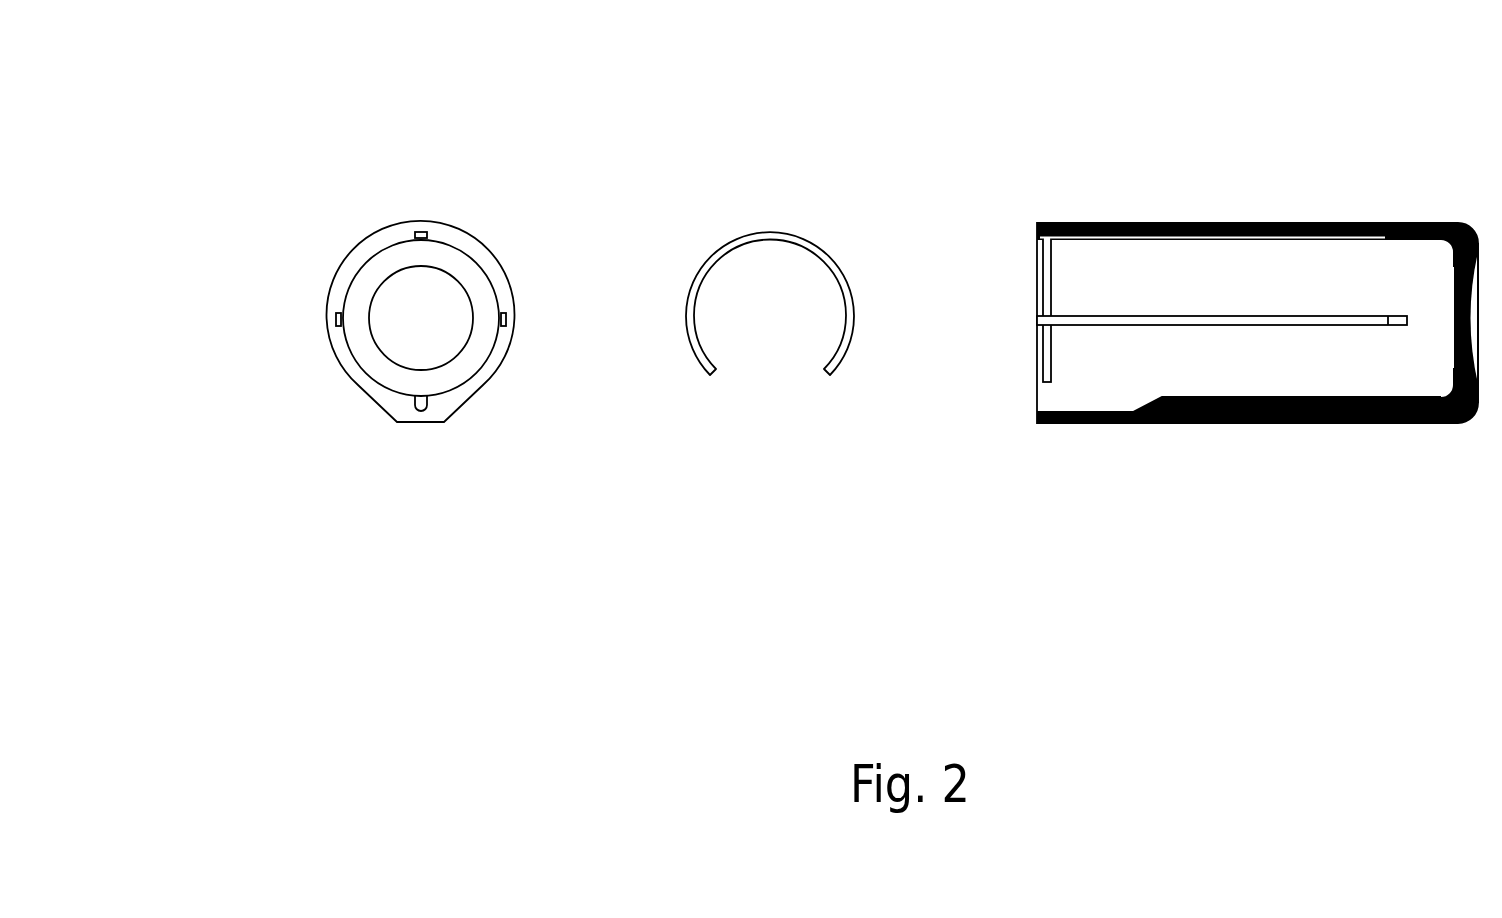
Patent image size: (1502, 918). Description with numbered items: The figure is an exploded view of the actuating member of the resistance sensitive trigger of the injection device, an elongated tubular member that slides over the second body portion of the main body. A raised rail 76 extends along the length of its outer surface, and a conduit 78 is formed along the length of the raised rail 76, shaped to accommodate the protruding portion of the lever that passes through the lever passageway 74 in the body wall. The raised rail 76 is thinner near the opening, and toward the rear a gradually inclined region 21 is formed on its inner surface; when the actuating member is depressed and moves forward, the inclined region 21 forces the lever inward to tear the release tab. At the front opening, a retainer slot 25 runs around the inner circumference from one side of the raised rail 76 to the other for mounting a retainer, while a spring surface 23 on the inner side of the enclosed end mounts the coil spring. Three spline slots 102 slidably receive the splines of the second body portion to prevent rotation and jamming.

The inclined region 21 is at (1156, 419).
The spring surface 23 is at (1447, 319).
The retainer slot 25 is at (1039, 267).
The lever passageway 74 is at (762, 235).
The raised rail 76 is at (1335, 424).
The conduit 78 is at (420, 412).
The spline slots 102 is at (332, 321).